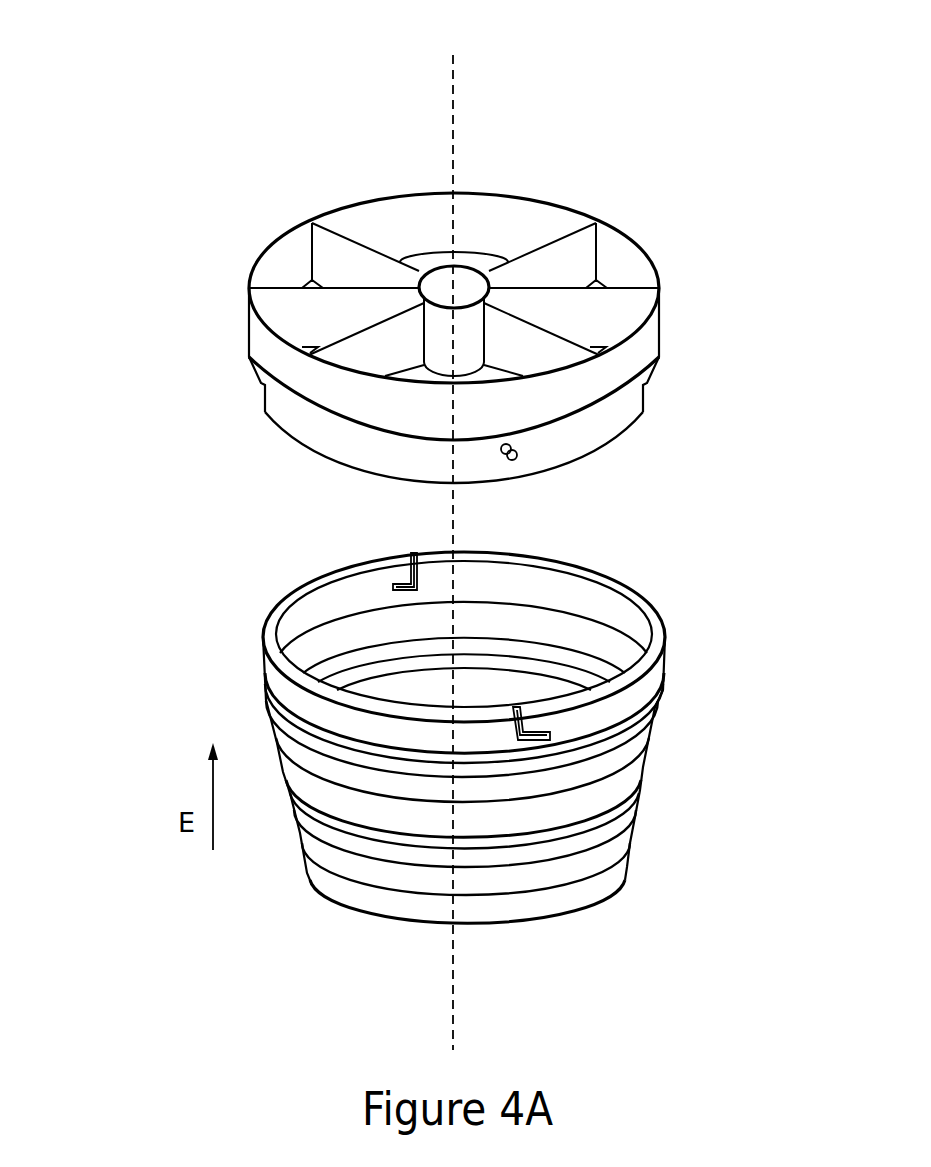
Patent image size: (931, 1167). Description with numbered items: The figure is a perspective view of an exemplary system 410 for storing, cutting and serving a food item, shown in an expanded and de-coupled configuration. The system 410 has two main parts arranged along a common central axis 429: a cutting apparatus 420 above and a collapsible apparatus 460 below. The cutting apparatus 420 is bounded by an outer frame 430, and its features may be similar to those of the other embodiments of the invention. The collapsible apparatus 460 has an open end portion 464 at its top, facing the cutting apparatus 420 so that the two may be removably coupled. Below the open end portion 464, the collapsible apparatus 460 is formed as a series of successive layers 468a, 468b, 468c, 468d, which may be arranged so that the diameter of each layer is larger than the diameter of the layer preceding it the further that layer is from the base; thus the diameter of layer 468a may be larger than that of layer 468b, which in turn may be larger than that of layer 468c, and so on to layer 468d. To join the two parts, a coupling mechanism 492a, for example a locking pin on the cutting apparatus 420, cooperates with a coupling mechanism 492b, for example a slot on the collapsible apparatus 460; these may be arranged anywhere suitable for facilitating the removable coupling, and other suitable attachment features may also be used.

The system 410 is at (151, 106).
The cutting apparatus 420 is at (246, 238).
The central axis 429 is at (445, 88).
The outer frame 430 is at (640, 247).
The collapsible apparatus 460 is at (243, 586).
The open end portion 464 is at (667, 662).
The layer 468a is at (645, 734).
The layer 468b is at (638, 770).
The layer 468c is at (634, 827).
The layer 468d is at (630, 870).
The coupling mechanism 492a is at (512, 458).
The coupling mechanism 492b is at (552, 737).